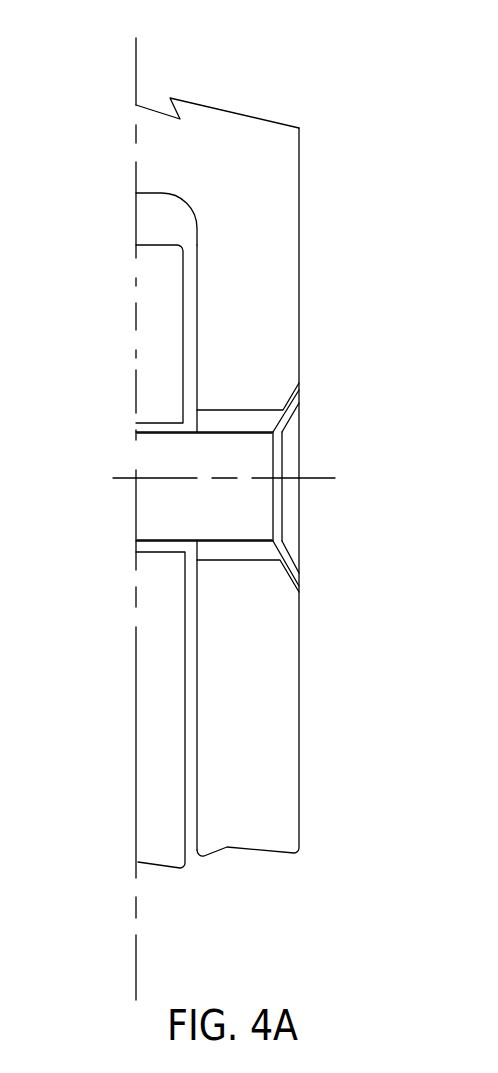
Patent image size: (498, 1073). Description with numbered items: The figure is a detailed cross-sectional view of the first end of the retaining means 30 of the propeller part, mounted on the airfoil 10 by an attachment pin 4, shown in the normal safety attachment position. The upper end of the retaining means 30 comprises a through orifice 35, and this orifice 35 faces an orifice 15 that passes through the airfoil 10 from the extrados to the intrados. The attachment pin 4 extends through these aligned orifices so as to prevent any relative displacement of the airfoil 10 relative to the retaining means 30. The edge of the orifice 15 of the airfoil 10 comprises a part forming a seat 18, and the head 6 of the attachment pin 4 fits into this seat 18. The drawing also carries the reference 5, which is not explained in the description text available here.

The attachment pin 4 is at (148, 507).
The rotor 5 is at (134, 214).
The head 6 is at (293, 470).
The airfoil 10 is at (287, 212).
The orifice 15 is at (263, 390).
The seat 18 is at (301, 382).
The retaining means 30 is at (160, 320).
The through orifice 35 is at (135, 449).